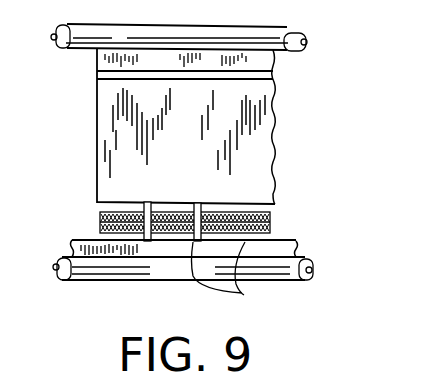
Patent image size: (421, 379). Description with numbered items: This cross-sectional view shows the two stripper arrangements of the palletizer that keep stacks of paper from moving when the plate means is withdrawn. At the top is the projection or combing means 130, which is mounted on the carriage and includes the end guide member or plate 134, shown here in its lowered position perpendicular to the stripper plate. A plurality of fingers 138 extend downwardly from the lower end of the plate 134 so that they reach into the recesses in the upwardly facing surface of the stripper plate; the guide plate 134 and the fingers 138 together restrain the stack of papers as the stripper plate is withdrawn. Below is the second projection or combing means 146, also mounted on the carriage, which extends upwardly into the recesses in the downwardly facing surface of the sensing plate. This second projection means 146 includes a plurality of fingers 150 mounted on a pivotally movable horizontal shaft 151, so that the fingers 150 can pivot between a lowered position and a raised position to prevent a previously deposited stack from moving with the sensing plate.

The projection or combing means 130 is at (203, 169).
The end guide member or plate 134 is at (230, 94).
The fingers 138 is at (198, 204).
The second projection or combing means 146 is at (202, 275).
The fingers 150 is at (241, 278).
The pivotally movable horizontal shaft 151 is at (298, 264).